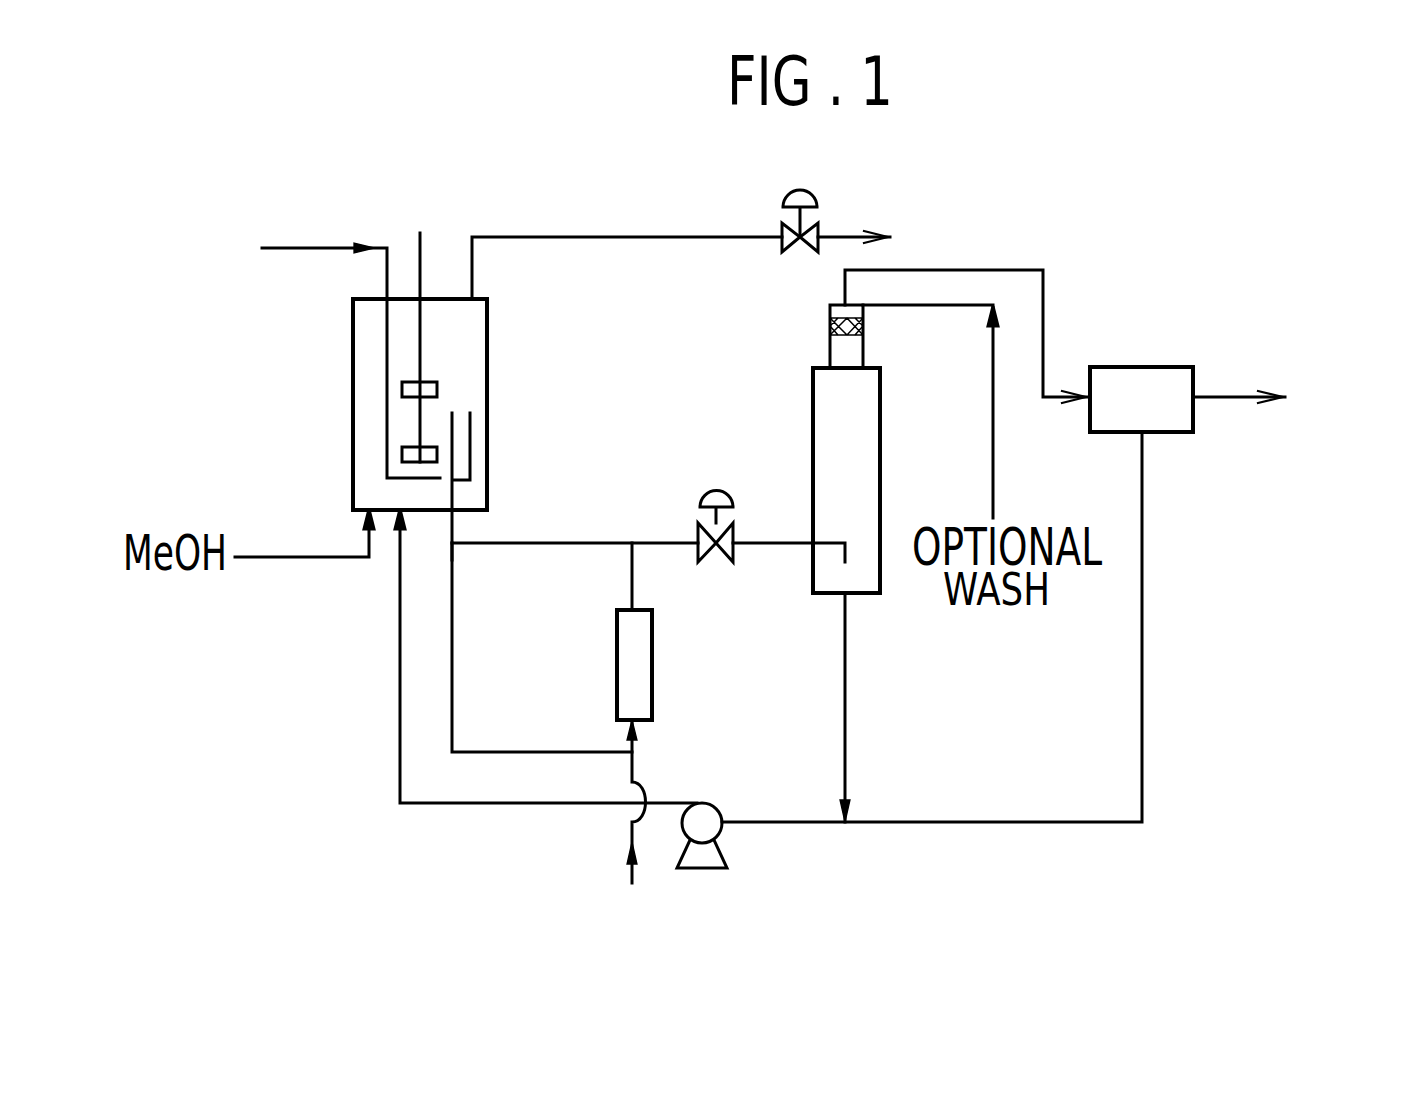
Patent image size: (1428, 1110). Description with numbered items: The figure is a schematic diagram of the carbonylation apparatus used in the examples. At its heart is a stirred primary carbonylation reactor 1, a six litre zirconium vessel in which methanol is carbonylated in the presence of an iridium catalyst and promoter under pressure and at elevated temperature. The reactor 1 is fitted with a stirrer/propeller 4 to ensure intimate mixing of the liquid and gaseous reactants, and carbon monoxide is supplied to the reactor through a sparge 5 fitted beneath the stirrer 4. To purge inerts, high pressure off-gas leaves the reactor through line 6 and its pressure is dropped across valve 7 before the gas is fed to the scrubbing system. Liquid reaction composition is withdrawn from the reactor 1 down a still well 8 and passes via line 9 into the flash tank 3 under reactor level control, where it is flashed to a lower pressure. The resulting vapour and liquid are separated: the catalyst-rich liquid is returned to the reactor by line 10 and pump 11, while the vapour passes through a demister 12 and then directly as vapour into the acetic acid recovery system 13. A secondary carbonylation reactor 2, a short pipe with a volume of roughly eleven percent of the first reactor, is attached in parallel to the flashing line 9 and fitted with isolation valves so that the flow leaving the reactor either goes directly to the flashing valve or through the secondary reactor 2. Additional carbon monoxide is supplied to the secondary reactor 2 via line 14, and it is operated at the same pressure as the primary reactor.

The primary carbonylation reactor 1 is at (353, 418).
The secondary carbonylation reactor 2 is at (652, 672).
The flash tank 3 is at (813, 408).
The stirrer/propeller 4 is at (422, 343).
The sparge 5 is at (398, 480).
The line 6 is at (583, 237).
The valve 7 is at (806, 190).
The still well 8 is at (472, 448).
The line 9 is at (757, 543).
The line 10 is at (848, 732).
The pump 11 is at (712, 868).
The demister 12 is at (830, 328).
The acetic acid recovery system 13 is at (1193, 367).
The line 14 is at (630, 832).